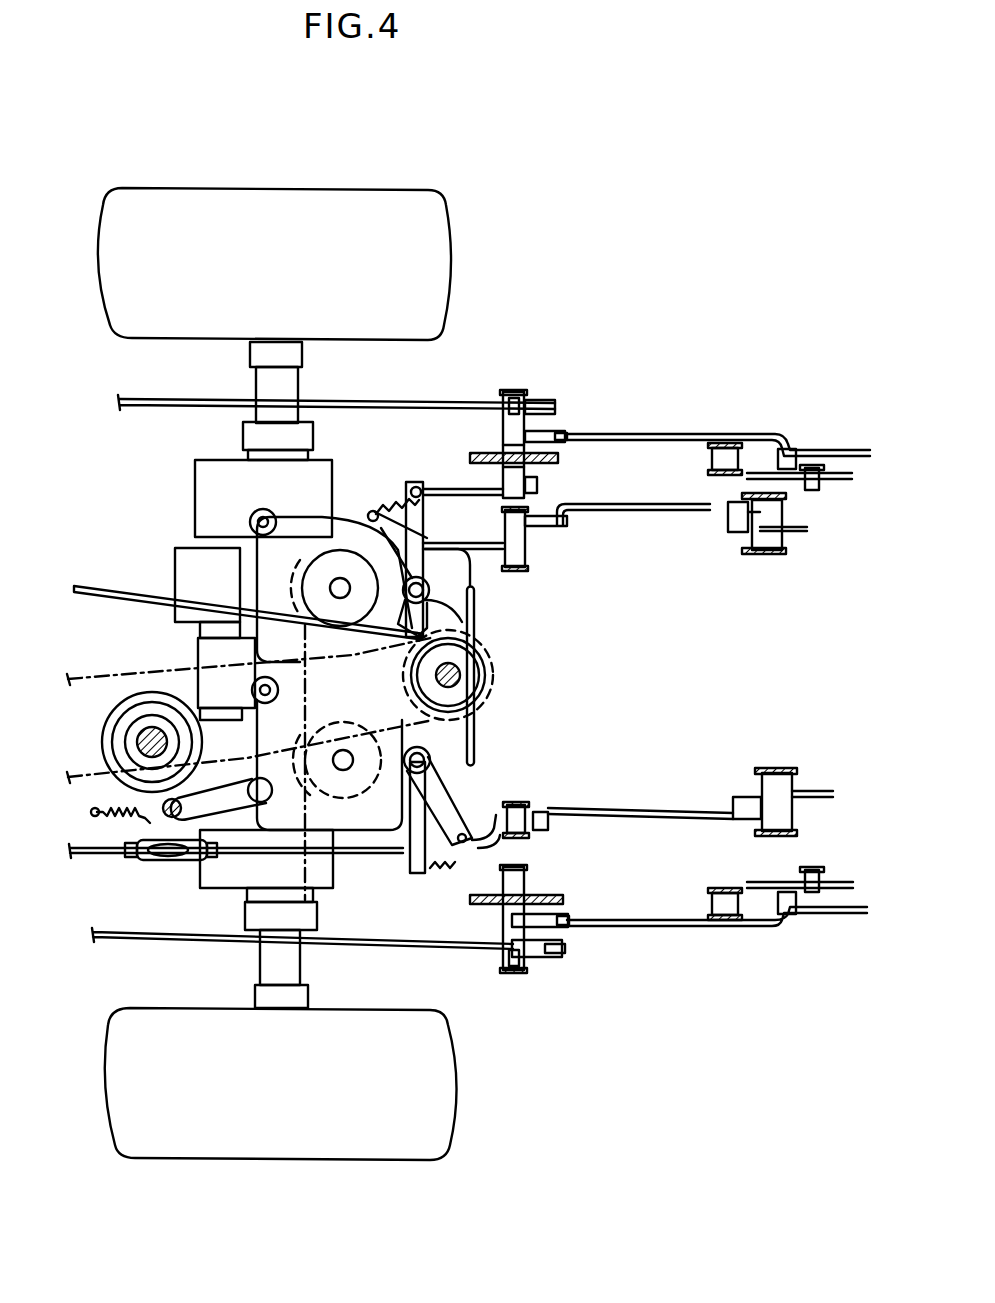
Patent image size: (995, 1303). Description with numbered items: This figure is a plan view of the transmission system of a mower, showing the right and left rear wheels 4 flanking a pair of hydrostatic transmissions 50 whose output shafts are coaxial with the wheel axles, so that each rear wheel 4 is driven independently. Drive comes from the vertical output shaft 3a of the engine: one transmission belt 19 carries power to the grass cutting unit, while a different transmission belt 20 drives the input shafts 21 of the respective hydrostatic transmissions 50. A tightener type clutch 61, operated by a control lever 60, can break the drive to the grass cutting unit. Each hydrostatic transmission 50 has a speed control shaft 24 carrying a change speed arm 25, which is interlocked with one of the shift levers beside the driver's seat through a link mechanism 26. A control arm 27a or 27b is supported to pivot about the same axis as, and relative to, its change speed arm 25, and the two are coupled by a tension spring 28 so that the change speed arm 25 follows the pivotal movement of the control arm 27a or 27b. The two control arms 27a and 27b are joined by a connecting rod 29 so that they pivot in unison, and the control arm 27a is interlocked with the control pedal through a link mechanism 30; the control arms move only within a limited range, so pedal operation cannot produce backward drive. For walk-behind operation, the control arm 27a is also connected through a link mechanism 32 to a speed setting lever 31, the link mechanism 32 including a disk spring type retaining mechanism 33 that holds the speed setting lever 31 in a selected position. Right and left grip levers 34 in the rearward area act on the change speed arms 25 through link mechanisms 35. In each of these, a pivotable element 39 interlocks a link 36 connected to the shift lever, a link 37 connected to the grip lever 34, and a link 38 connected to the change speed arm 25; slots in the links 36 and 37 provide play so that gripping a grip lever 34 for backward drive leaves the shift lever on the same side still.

The rear wheels 4 is at (453, 243).
The vertical output shaft 3a is at (460, 676).
The transmission belt 19 is at (182, 698).
The transmission belt 20 is at (298, 603).
The input shafts 21 is at (340, 578).
The speed control shaft 24 is at (430, 592).
The change speed arm 25 is at (415, 483).
The link mechanism 26 is at (494, 388).
The control arm 27a is at (470, 612).
The control arm 27b is at (470, 846).
The tension spring 28 is at (385, 480).
The connecting rod 29 is at (478, 735).
The link mechanism 30 is at (116, 586).
The speed setting lever 31 is at (793, 533).
The link mechanism 32 is at (652, 512).
The disk spring type retaining mechanism 33 is at (768, 505).
The grip levers 34 is at (836, 455).
The link mechanisms 35 is at (668, 420).
The link 36 is at (556, 406).
The link 37 is at (565, 437).
The link 38 is at (456, 452).
The pivotable element 39 is at (513, 396).
The hydrostatic transmissions 50 is at (346, 512).
The control lever 60 is at (815, 793).
The tightener type clutch 61 is at (222, 822).